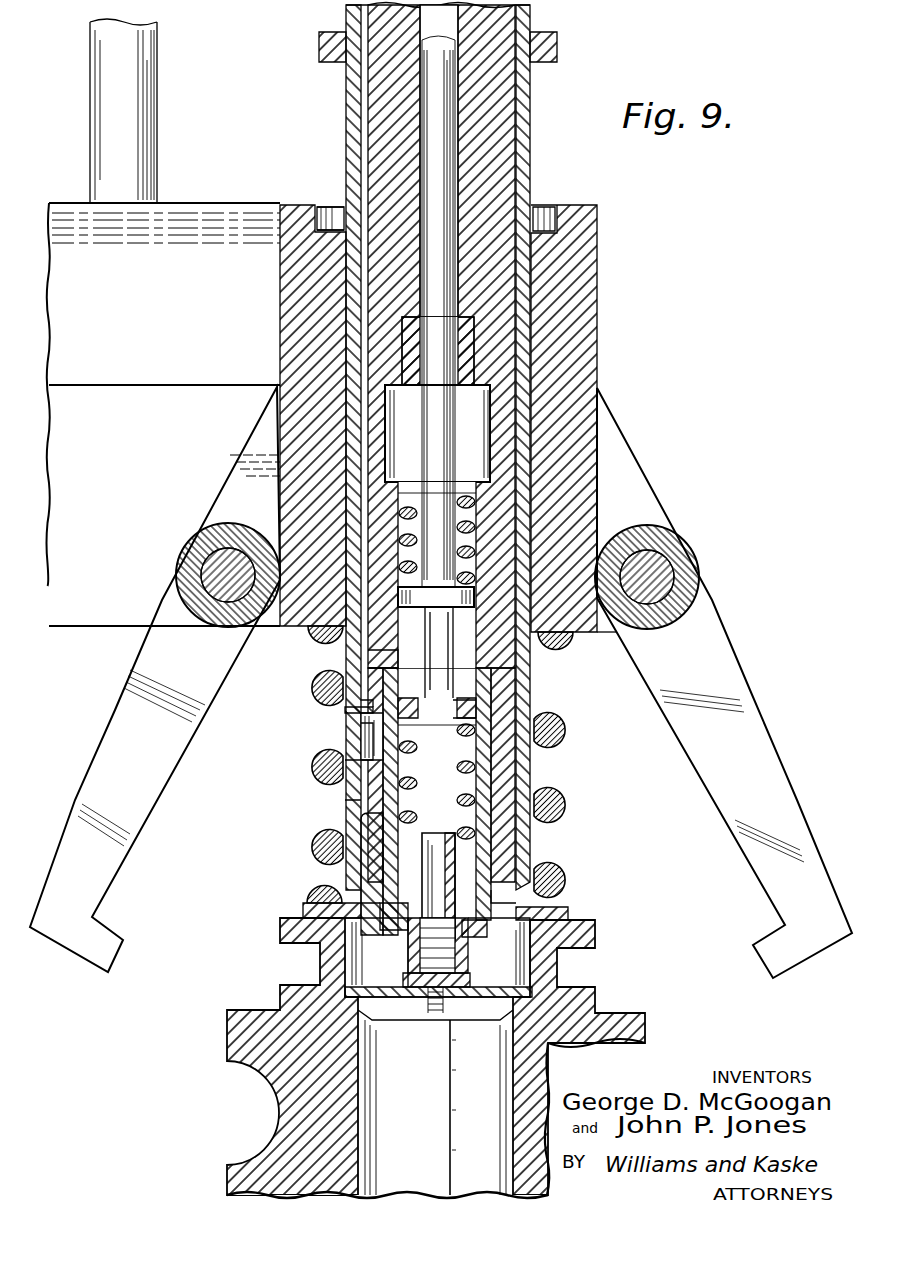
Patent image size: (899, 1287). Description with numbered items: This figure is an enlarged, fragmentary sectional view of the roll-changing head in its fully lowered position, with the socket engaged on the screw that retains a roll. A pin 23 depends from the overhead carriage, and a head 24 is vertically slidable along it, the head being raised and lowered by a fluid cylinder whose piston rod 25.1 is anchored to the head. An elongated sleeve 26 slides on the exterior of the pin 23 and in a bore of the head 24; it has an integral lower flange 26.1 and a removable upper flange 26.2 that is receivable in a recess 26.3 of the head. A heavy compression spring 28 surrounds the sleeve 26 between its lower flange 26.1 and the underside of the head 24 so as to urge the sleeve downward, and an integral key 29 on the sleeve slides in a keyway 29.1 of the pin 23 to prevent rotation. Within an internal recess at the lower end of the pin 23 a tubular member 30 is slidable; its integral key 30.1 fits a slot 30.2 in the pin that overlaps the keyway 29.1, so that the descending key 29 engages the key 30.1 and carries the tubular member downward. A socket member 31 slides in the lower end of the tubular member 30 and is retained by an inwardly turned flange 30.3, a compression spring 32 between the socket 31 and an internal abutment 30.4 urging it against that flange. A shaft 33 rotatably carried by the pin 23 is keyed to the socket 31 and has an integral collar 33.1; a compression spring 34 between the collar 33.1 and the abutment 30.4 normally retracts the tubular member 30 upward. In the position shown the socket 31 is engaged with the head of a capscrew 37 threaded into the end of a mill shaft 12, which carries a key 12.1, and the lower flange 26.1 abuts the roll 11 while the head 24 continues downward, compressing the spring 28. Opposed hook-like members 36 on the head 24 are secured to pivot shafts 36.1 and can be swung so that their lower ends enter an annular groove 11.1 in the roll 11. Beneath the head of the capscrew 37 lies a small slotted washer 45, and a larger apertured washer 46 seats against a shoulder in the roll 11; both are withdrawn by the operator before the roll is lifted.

The roll 11 is at (648, 1035).
The annular groove 11.1 is at (557, 967).
The mill shaft 12 is at (485, 1078).
The key 12.1 is at (432, 1155).
The pin 23 is at (490, 155).
The head 24 is at (600, 275).
The piston rod 25.1 is at (130, 130).
The sleeve 26 is at (346, 130).
The lower flange 26.1 is at (567, 910).
The upper flange 26.2 is at (322, 48).
The recess 26.3 is at (325, 207).
The compression spring 28 is at (556, 730).
The key 29 is at (365, 738).
The keyway 29.1 is at (368, 655).
The tubular member 30 is at (378, 905).
The key 30.1 is at (355, 800).
The slot 30.2 is at (380, 700).
The inwardly turned flange 30.3 is at (320, 958).
The abutment 30.4 is at (465, 440).
The socket member 31 is at (460, 865).
The compression spring 32 is at (460, 780).
The shaft 33 is at (437, 415).
The collar 33.1 is at (465, 345).
The compression spring 34 is at (466, 520).
The hook-like member 36 is at (155, 775).
The pivot shaft 36.1 is at (215, 568).
The capscrew 37 is at (437, 1006).
The slotted washer 45 is at (470, 982).
The apertured washer 46 is at (375, 982).